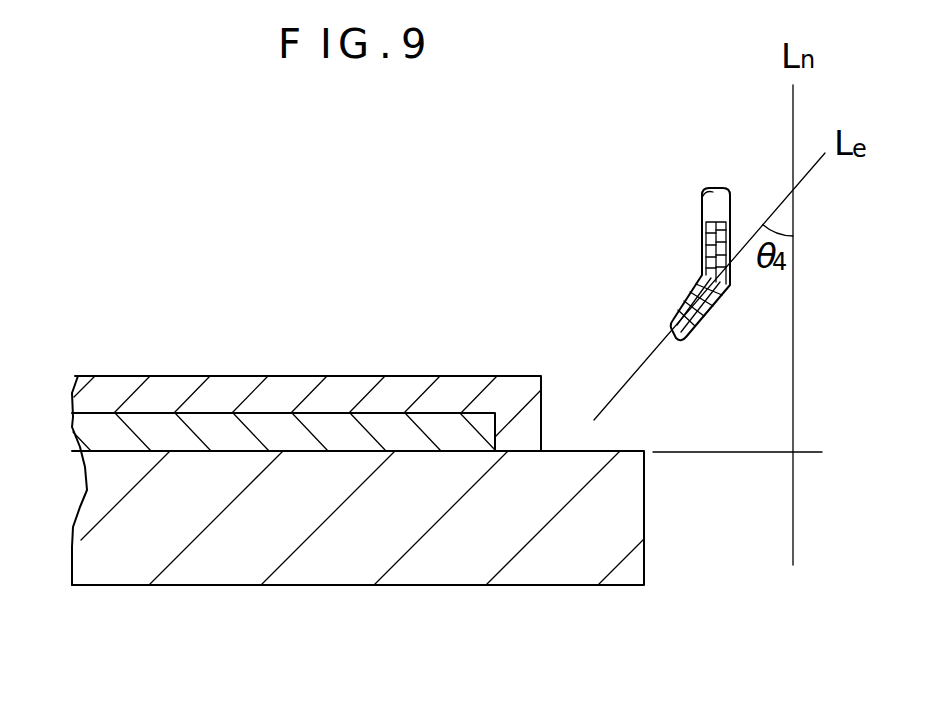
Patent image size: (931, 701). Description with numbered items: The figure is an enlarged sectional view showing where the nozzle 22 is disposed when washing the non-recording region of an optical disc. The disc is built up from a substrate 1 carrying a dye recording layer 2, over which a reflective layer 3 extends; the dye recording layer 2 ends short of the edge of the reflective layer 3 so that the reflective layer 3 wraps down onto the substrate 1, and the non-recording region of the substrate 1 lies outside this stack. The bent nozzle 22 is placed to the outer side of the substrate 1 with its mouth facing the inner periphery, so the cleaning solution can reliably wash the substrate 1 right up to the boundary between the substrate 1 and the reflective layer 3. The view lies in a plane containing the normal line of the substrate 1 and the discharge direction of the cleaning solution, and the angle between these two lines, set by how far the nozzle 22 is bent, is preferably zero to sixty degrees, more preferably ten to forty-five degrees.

The substrate 1 is at (438, 573).
The dye recording layer 2 is at (103, 433).
The reflective layer 3 is at (408, 392).
The nozzle 22 is at (702, 246).